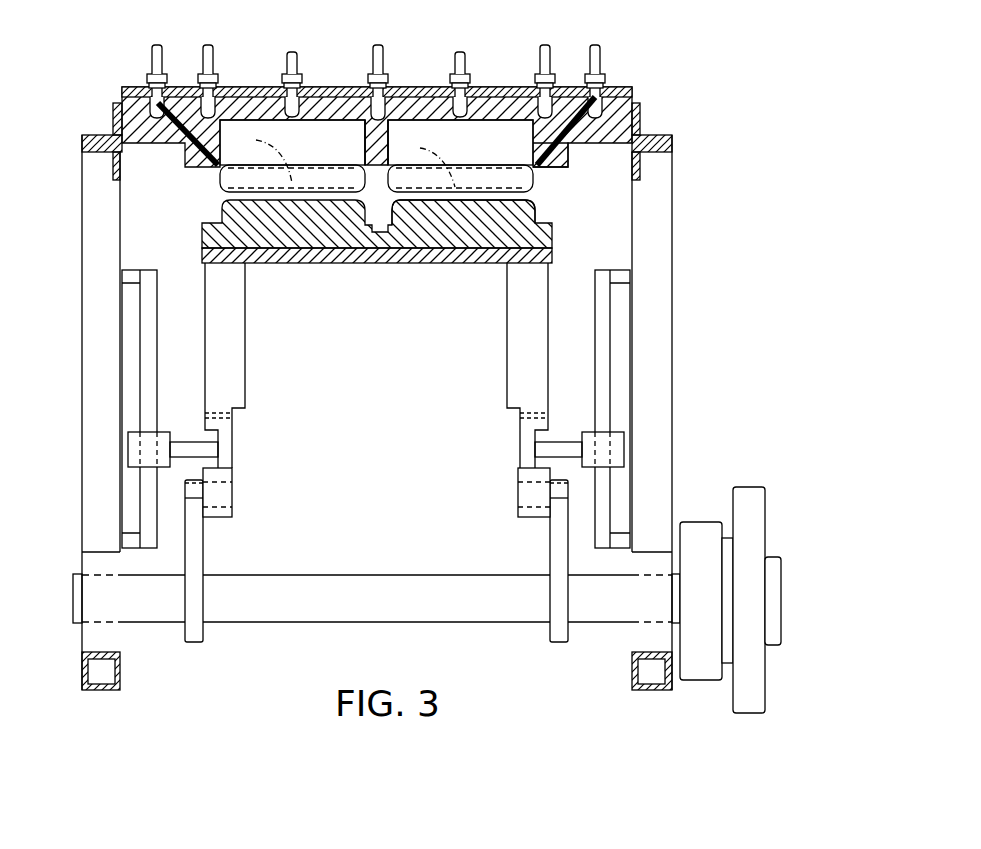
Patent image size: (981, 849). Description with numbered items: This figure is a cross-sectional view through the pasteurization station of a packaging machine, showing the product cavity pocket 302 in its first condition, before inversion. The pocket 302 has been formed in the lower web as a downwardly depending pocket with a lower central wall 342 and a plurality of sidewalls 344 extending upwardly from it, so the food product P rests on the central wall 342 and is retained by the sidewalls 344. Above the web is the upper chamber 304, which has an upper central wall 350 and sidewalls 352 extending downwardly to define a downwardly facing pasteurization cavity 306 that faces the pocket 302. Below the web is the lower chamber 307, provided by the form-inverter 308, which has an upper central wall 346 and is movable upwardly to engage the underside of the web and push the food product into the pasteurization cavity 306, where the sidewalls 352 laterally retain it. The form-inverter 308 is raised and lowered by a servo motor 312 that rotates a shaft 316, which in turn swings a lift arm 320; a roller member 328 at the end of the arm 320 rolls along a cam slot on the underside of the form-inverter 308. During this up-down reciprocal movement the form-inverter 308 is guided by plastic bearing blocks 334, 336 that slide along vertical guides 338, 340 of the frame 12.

The frame 12 is at (660, 195).
The product cavity pocket 302 is at (540, 162).
The upper chamber 304 is at (342, 107).
The pasteurization cavity 306 is at (515, 128).
The lower chamber 307 is at (553, 235).
The form-inverter 308 is at (523, 212).
The servo motor 312 is at (698, 530).
The shaft 316 is at (387, 595).
The lift arm 320 is at (202, 553).
The roller member 328 is at (235, 513).
The plastic bearing block 334 is at (627, 445).
The plastic bearing block 336 is at (125, 450).
The vertical guide 338 is at (602, 357).
The vertical guide 340 is at (150, 354).
The lower central wall 342 is at (318, 193).
The sidewalls 344 is at (537, 178).
The upper central wall 346 is at (281, 198).
The upper central wall 350 is at (436, 118).
The sidewalls 352 is at (395, 118).